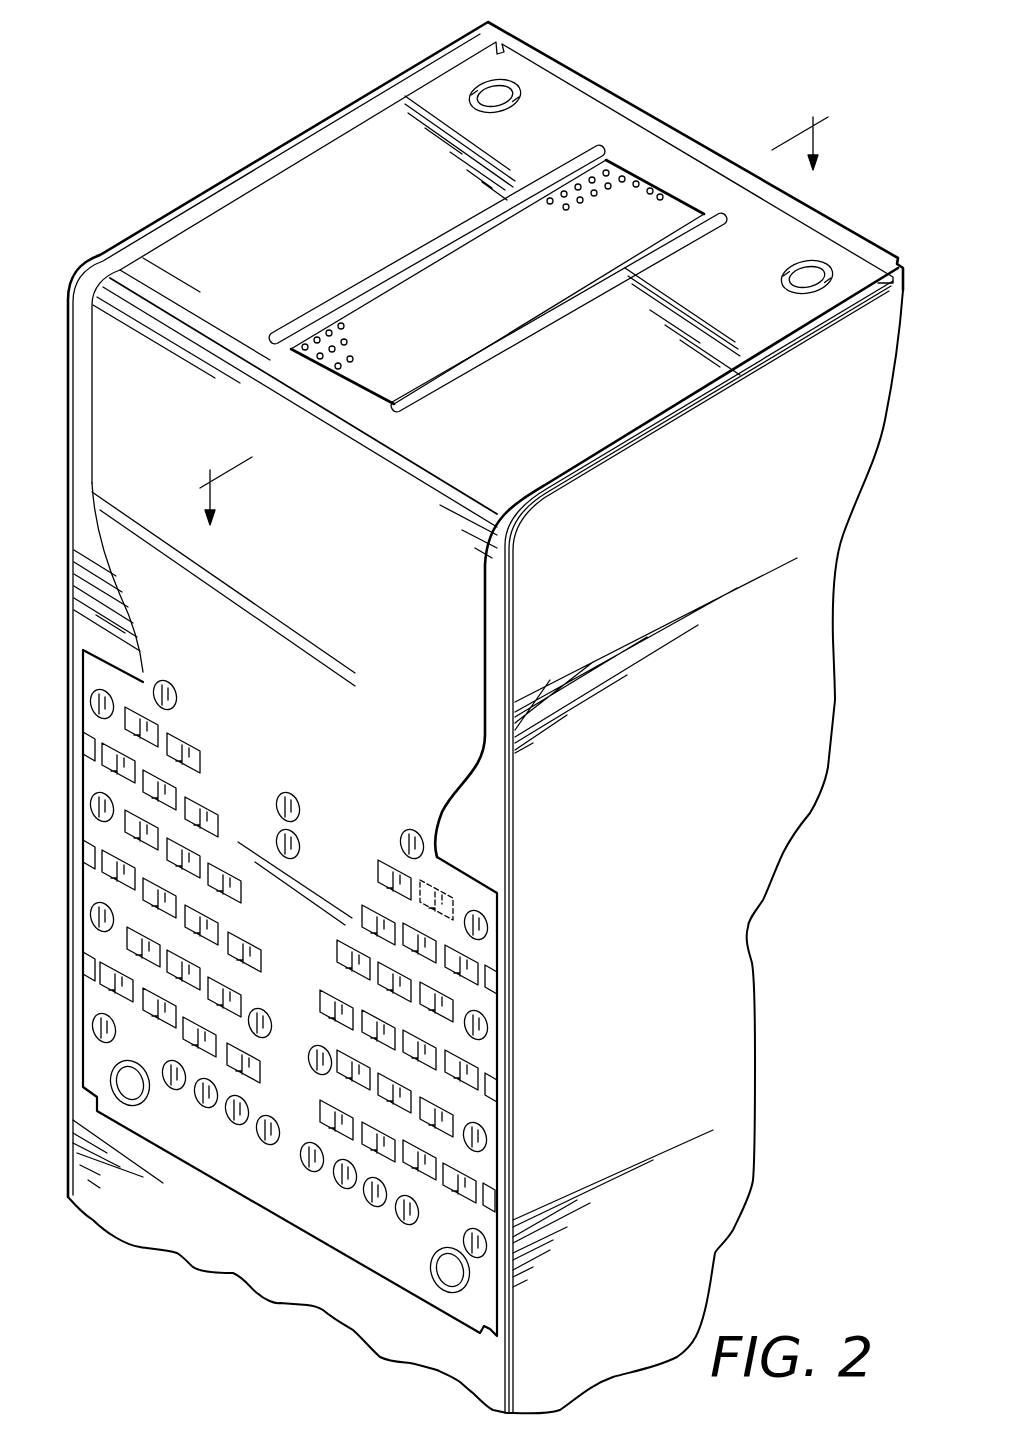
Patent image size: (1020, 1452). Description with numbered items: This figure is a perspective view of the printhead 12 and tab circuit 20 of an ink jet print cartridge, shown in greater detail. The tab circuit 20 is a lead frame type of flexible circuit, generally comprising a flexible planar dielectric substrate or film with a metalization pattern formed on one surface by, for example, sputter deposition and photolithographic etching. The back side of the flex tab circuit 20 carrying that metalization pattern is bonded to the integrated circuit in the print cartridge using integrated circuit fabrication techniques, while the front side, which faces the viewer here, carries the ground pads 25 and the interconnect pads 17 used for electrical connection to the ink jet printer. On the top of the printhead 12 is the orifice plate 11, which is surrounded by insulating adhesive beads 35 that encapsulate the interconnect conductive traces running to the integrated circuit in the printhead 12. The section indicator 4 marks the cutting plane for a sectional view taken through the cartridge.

The orifice plate 11 is at (658, 190).
The printhead 12 is at (58, 627).
The interconnect pads 17 is at (447, 887).
The tab circuit 20 is at (224, 1189).
The ground pads 25 is at (173, 705).
The insulating adhesive beads 35 is at (390, 273).
The section line 4- 4 is at (508, 304).